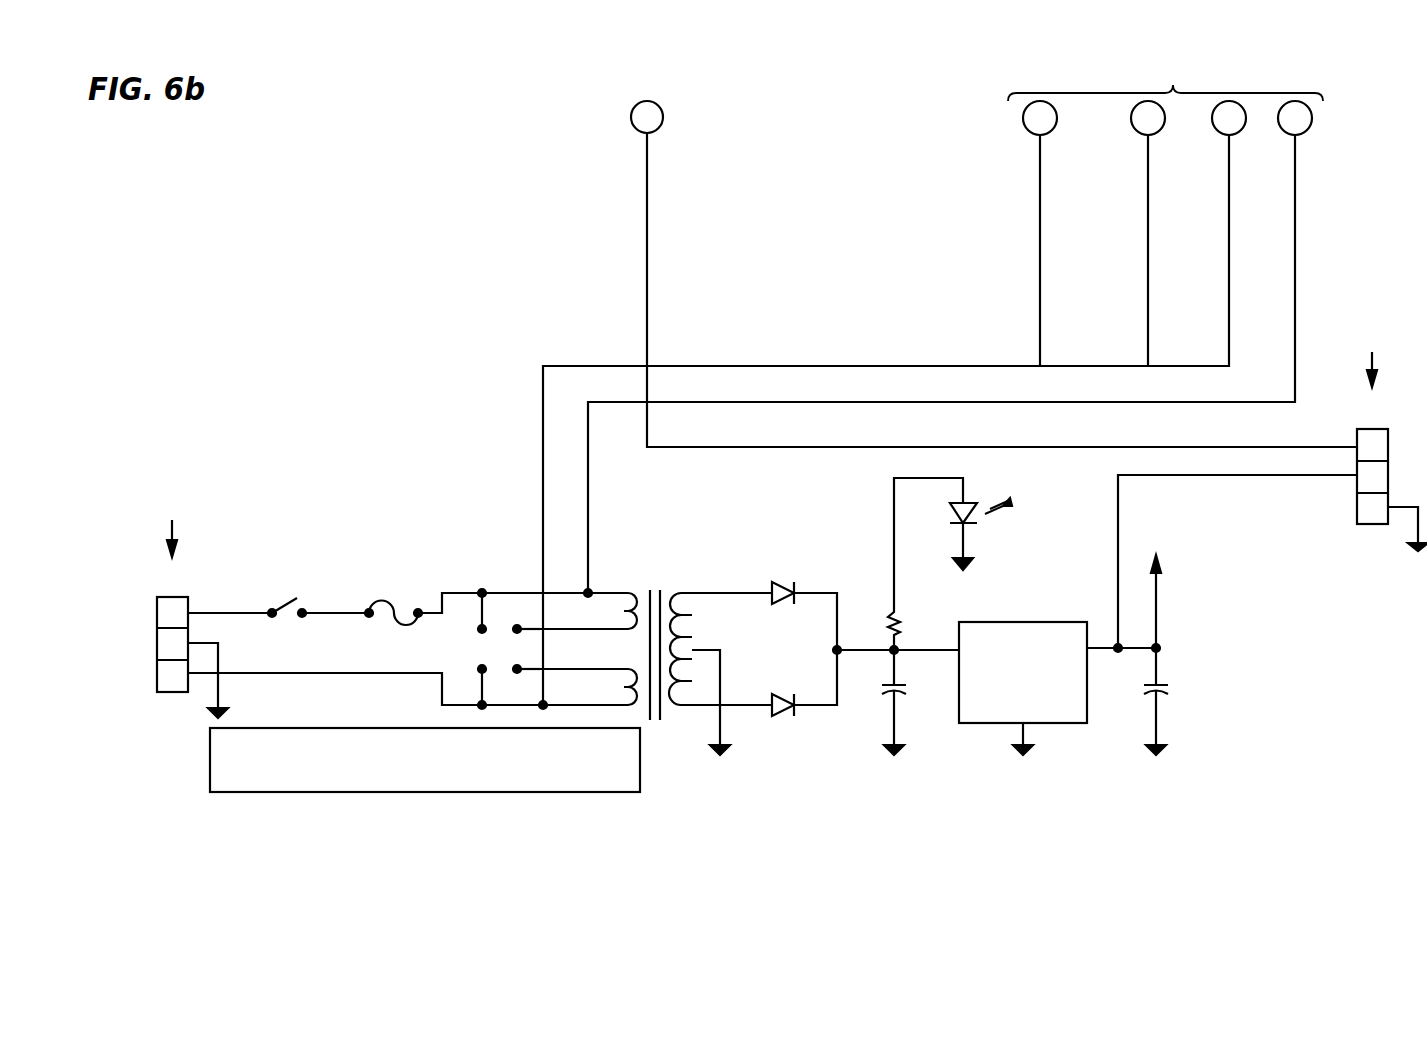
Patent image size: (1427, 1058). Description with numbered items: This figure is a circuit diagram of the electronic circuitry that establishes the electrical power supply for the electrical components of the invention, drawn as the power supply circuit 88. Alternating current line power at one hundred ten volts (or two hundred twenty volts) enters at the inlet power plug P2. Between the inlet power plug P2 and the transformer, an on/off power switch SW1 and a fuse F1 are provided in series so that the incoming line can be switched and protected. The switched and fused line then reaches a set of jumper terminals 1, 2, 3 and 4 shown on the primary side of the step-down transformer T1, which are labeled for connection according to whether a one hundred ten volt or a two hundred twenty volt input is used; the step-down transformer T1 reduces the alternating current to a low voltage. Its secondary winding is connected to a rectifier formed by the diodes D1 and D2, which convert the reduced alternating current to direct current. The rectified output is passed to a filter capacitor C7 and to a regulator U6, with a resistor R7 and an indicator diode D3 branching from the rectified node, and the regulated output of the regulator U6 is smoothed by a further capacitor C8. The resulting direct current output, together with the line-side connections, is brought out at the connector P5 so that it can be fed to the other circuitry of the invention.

The power supply circuit 88 is at (441, 268).
The inlet power plug P2 is at (171, 628).
The on/off power switch SW1 is at (289, 595).
The fuse F1 is at (393, 595).
The jumper terminal 1 is at (472, 611).
The jumper terminal 2 is at (526, 616).
The jumper terminal 3 is at (472, 687).
The jumper terminal 4 is at (526, 684).
The transformer T1 is at (643, 619).
The rectifier diode D1 is at (783, 576).
The rectifier diode D2 is at (783, 688).
The LED indicator D3 is at (963, 534).
The resistor R7 is at (879, 625).
The filter capacitor C7 is at (882, 702).
The voltage regulator U6 is at (1023, 672).
The output capacitor C8 is at (1144, 701).
The output connector to J5 P5 is at (1371, 459).